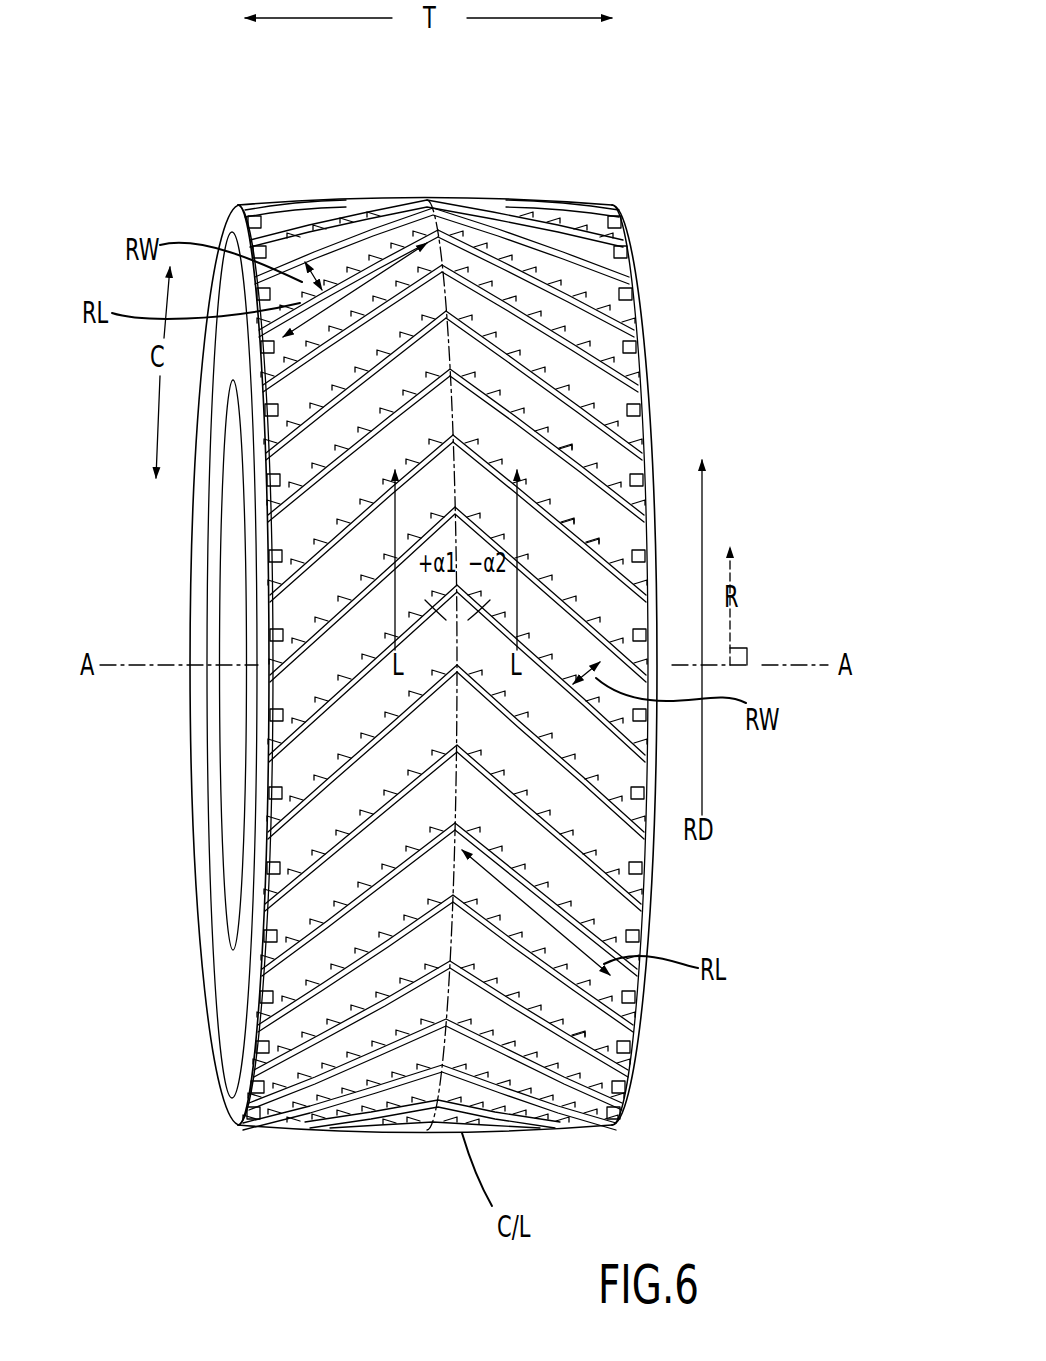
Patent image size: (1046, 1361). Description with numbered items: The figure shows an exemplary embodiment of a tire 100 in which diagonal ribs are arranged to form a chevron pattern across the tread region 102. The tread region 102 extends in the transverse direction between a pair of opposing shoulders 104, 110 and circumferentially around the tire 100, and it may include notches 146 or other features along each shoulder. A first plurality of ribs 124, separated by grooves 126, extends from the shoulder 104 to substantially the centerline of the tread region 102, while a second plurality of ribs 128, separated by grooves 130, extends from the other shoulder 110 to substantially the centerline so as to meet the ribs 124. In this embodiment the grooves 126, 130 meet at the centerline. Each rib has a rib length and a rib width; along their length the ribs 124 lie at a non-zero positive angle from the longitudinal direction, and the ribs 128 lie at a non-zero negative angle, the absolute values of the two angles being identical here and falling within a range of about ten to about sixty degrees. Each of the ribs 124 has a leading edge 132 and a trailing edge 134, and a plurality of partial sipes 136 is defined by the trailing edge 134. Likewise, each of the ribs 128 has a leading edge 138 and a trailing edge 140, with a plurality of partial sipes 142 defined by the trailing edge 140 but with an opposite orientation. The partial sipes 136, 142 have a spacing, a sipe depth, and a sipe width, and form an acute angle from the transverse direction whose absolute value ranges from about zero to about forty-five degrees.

The tire 100 is at (646, 120).
The tread region 102 is at (316, 178).
The shoulder 104 is at (237, 1138).
The shoulder 110 is at (614, 1138).
The first plurality of ribs 124 is at (320, 633).
The grooves 126 is at (323, 642).
The ribs 128 is at (590, 380).
The grooves 130 is at (592, 333).
The leading edge 132 is at (300, 493).
The trailing edge 134 is at (372, 408).
The partial sipes 136 is at (300, 742).
The leading edge 138 is at (582, 470).
The trailing edge 140 is at (578, 514).
The partial sipes 142 is at (570, 518).
The notches 146 is at (628, 257).